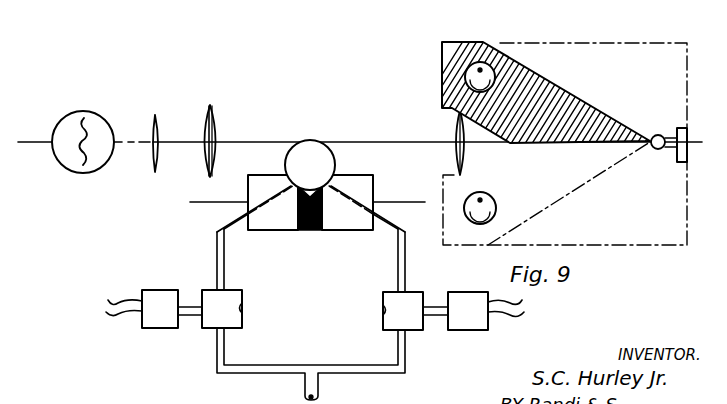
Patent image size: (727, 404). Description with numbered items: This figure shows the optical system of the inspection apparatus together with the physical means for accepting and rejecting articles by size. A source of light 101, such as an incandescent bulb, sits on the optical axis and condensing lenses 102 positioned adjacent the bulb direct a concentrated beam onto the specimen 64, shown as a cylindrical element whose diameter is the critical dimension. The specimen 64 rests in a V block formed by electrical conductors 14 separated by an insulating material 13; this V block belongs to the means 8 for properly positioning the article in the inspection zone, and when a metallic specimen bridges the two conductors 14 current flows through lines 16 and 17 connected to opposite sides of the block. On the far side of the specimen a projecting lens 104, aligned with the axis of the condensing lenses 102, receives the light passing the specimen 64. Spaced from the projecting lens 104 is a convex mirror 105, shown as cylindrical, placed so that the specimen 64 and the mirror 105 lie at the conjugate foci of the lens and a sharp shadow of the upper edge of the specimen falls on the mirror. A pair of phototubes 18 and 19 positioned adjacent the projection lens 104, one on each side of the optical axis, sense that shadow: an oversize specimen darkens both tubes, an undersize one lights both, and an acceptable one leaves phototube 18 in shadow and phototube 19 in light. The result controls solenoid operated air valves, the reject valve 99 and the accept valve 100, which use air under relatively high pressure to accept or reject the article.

The source of light 101 is at (72, 112).
The condensing lenses 102 is at (208, 105).
The specimen 64 is at (308, 141).
The electrical conductors 14 is at (268, 230).
The insulating material 13 is at (321, 232).
The line 16 is at (200, 202).
The line 17 is at (392, 186).
The means for positioning the article 8 is at (322, 323).
The accept valve 100 is at (168, 270).
The reject valve 99 is at (467, 330).
The projecting lens 104 is at (455, 140).
The phototube 18 is at (496, 80).
The phototube 19 is at (497, 208).
The convex mirror 105 is at (655, 136).